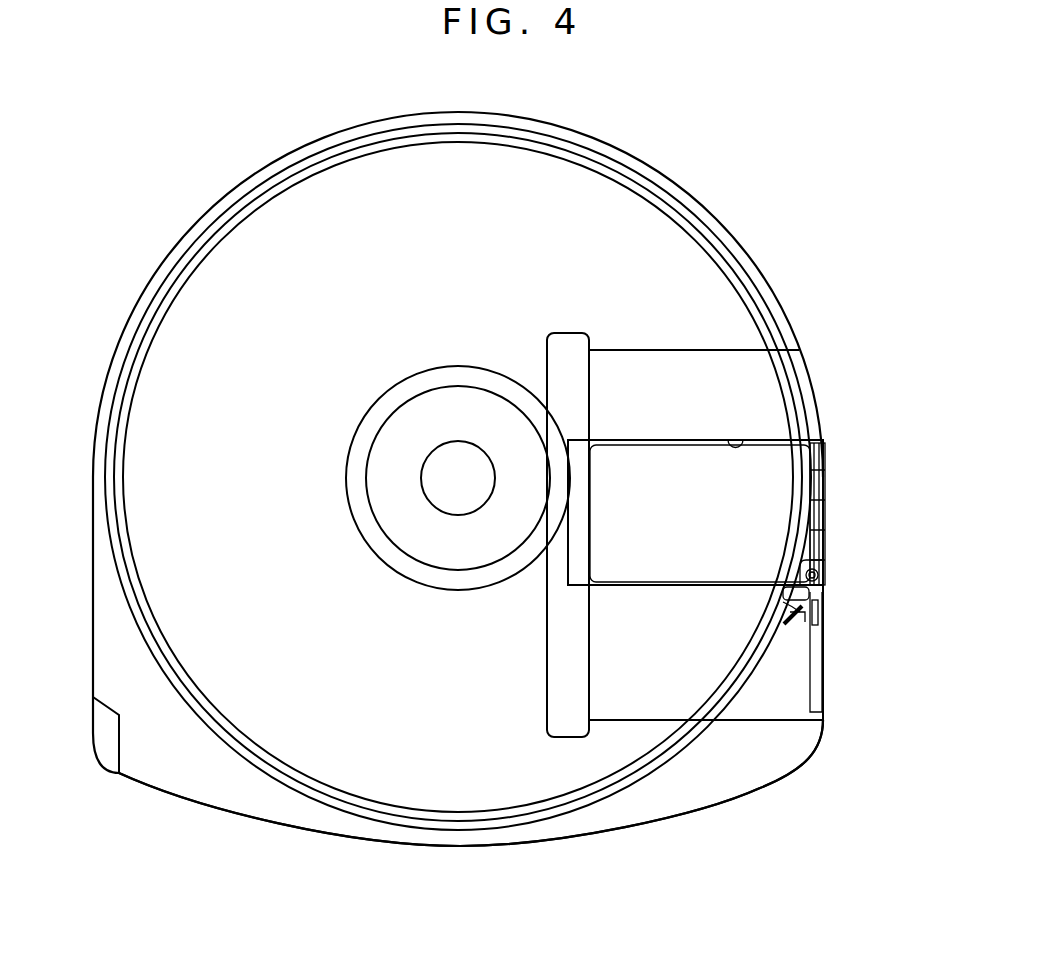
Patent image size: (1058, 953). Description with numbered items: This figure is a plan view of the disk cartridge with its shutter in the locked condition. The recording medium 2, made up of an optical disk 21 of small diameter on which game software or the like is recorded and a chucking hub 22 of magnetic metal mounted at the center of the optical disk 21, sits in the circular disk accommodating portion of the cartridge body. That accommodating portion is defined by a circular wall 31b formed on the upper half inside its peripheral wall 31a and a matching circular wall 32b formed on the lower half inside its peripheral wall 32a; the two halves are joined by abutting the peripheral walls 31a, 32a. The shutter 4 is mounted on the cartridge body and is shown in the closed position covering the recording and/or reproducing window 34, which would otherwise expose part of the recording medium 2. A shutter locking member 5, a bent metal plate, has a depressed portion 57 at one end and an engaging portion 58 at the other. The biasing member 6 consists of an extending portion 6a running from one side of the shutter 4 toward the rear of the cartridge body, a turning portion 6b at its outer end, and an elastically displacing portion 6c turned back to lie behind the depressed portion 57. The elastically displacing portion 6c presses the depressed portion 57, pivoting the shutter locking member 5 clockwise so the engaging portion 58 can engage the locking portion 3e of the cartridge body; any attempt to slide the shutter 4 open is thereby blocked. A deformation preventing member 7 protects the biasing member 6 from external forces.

The recording medium 2 is at (458, 457).
The optical disk 21 is at (637, 210).
The chucking hub 22 is at (495, 403).
The shutter 4 is at (697, 437).
The recording and/or reproducing window 34 is at (733, 440).
The shutter locking member 5 is at (811, 552).
The depressed portion 57 is at (826, 546).
The engaging portion 58 is at (778, 588).
The locking portion 3e is at (780, 603).
The deformation preventing member 7 is at (768, 608).
The biasing member 6 is at (847, 677).
The extending portion 6a is at (813, 595).
The turning portion 6b is at (793, 625).
The elastically displacing portion 6c is at (802, 617).
The peripheral wall 31a is at (323, 833).
The peripheral wall 32a is at (289, 852).
The circular wall 31b is at (460, 828).
The circular wall 32b is at (617, 826).